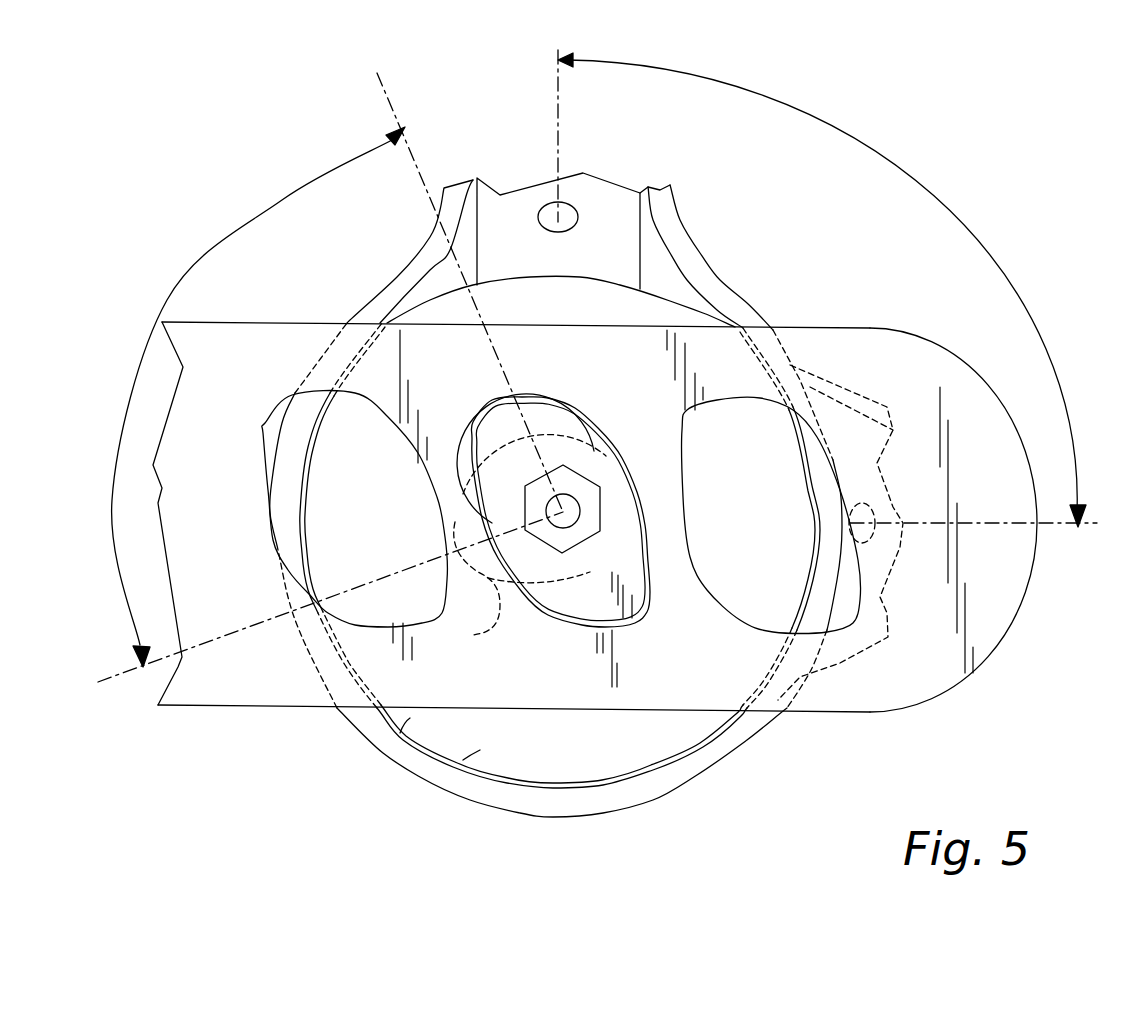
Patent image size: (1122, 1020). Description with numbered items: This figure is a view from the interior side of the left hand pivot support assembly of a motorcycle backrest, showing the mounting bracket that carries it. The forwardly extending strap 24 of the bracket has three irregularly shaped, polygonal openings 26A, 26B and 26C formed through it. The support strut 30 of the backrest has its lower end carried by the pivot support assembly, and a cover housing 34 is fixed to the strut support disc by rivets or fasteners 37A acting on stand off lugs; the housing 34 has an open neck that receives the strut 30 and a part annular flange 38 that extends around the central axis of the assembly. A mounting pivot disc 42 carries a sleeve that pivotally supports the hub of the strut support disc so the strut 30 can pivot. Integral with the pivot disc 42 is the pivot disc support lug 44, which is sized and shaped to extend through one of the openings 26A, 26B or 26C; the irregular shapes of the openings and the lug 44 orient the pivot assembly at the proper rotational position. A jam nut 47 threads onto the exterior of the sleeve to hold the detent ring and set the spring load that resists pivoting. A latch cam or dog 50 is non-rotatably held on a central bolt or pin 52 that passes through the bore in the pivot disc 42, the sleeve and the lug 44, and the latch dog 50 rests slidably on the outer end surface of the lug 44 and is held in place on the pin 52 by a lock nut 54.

The forwardly extending strap 24 is at (862, 688).
The polygonal opening 26A is at (727, 432).
The polygonal opening 26B is at (635, 582).
The polygonal opening 26C is at (353, 423).
The support strut 30 is at (600, 213).
The cover housing 34 is at (681, 800).
The rivets or fasteners 37A is at (663, 207).
The part annular flange 38 is at (497, 793).
The mounting pivot disc 42 is at (383, 753).
The pivot disc support lug 44 is at (578, 605).
The jam nut 47 is at (397, 733).
The latch cam or dog 50 is at (540, 400).
The central bolt or pin 52 is at (573, 505).
The lock nut 54 is at (588, 522).